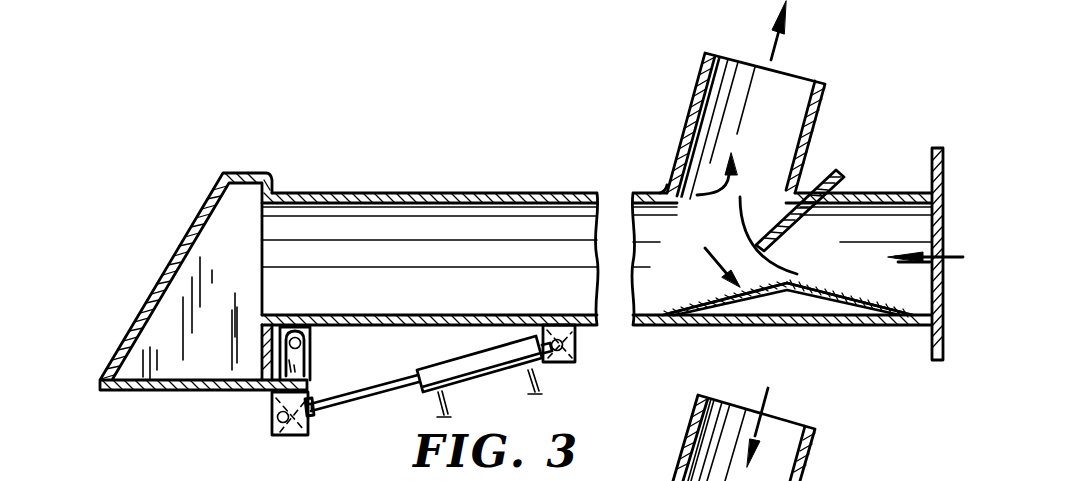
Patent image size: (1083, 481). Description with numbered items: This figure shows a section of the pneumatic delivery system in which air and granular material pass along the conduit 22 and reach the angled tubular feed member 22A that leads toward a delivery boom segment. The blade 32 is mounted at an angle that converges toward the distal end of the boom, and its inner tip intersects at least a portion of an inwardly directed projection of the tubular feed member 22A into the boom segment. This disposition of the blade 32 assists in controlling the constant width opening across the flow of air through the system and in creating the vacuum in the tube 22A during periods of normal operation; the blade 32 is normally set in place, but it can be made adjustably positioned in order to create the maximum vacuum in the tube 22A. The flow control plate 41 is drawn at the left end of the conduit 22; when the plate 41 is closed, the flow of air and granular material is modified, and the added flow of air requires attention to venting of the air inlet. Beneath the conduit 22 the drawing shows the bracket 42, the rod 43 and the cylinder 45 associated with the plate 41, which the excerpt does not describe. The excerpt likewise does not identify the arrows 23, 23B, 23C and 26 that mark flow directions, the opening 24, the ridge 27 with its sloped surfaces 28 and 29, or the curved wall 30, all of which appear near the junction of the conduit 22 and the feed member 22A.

The main conduit pipe 22 is at (270, 230).
The tubular feed member 22A is at (821, 106).
The flow direction in main conduit 23 is at (960, 262).
The flow direction into lower branch 23B is at (770, 393).
The flow direction into upper branch 23C is at (779, 50).
The branch opening 24 is at (665, 192).
The flow direction toward lower branch 26 is at (706, 260).
The deflector ridge 27 is at (787, 293).
The downstream sloped surface of deflector 28 is at (845, 297).
The upstream sloped surface of deflector 29 is at (698, 303).
The curved diverter wall 30 is at (772, 260).
The blade 32 is at (777, 226).
The flow control plate 41 is at (186, 390).
The upper bracket 42 is at (305, 367).
The actuator rod 43 is at (376, 396).
The hydraulic cylinder 45 is at (492, 370).